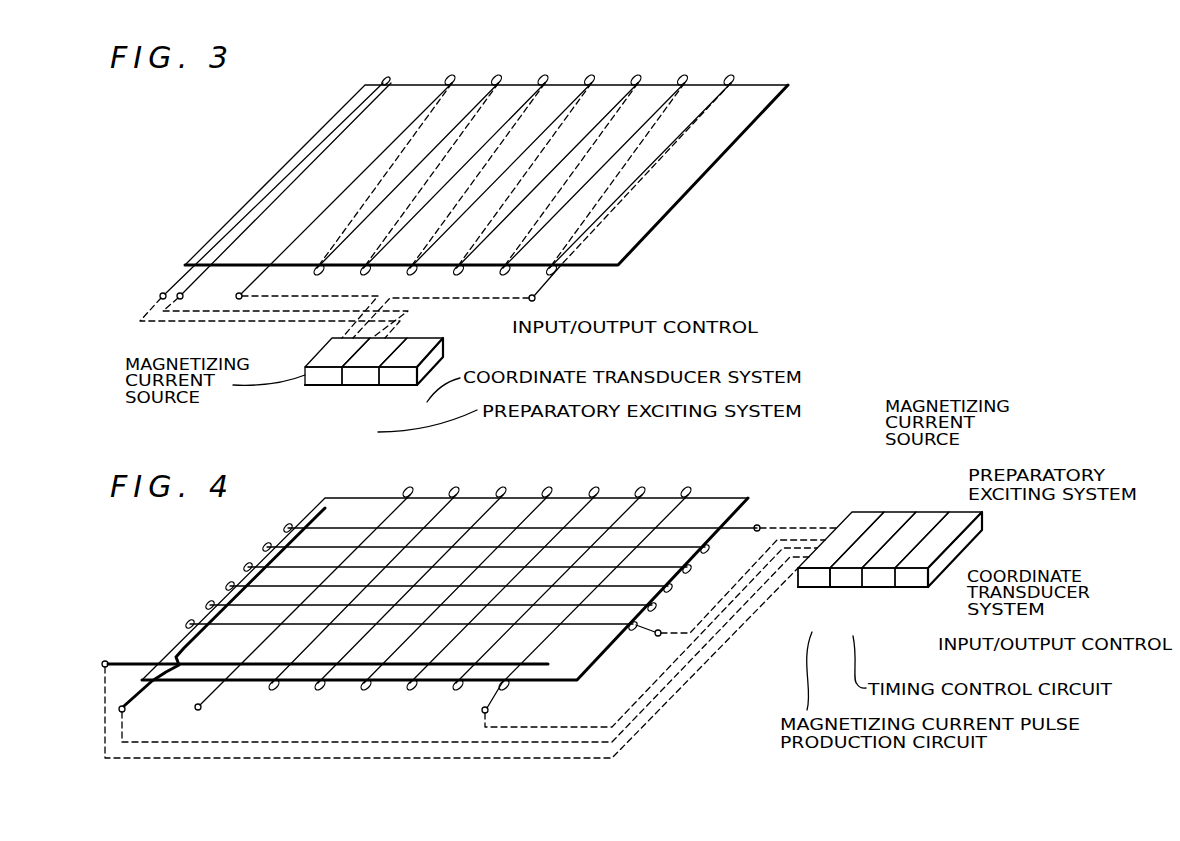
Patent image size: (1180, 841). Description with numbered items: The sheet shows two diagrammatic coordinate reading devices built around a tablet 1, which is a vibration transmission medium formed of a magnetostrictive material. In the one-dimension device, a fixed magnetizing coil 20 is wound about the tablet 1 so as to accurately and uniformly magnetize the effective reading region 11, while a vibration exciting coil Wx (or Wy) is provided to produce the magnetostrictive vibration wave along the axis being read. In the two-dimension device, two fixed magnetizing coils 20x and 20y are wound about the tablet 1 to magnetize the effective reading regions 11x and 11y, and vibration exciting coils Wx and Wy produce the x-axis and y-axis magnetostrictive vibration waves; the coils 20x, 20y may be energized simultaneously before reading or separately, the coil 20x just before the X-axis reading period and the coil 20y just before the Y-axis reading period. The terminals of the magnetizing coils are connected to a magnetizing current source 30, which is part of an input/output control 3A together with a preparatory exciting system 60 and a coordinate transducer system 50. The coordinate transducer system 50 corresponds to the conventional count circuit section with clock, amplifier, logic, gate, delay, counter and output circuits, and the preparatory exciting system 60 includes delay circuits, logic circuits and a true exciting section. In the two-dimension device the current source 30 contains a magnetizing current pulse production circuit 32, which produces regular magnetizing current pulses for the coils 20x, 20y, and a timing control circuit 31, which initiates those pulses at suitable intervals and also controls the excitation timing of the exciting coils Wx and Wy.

In FIG. 3, the tablet 1 is at (742, 125).
In FIG. 4, the tablet 1 is at (728, 507).
In FIG. 3, the effective reading region 11 is at (460, 76).
In FIG. 4, the effective reading region in x direction 11x is at (407, 493).
In FIG. 4, the effective reading region in y direction 11y is at (283, 526).
In FIG. 3, the fixed magnetizing coil 20 is at (438, 137).
In FIG. 4, the fixed magnetizing coil for x axis 20x is at (505, 494).
In FIG. 4, the fixed magnetizing coil for y axis 20y is at (690, 568).
In FIG. 3, the vibration exciting coil Wx is at (267, 196).
In FIG. 4, the vibration exciting coil Wx is at (178, 643).
In FIG. 4, the vibration exciting coil Wy is at (260, 667).
In FIG. 3, the input/output control 3A is at (405, 377).
In FIG. 4, the input/output control 3A is at (913, 557).
In FIG. 3, the magnetizing current source 30 is at (322, 385).
In FIG. 4, the magnetizing current source 30 is at (883, 506).
In FIG. 4, the timing control circuit 31 is at (852, 582).
In FIG. 4, the magnetizing current pulse production circuit 32 is at (813, 582).
In FIG. 3, the coordinate transducer system 50 is at (402, 385).
In FIG. 4, the coordinate transducer system 50 is at (970, 512).
In FIG. 3, the preparatory exciting system 60 is at (362, 385).
In FIG. 4, the preparatory exciting system 60 is at (937, 512).